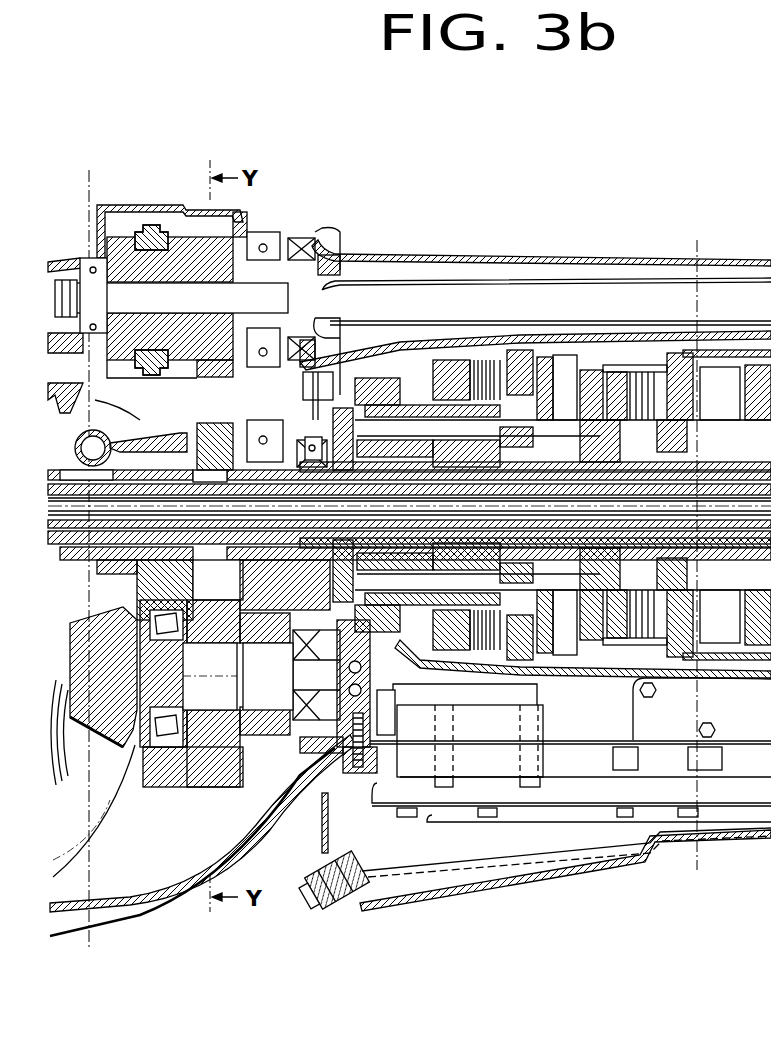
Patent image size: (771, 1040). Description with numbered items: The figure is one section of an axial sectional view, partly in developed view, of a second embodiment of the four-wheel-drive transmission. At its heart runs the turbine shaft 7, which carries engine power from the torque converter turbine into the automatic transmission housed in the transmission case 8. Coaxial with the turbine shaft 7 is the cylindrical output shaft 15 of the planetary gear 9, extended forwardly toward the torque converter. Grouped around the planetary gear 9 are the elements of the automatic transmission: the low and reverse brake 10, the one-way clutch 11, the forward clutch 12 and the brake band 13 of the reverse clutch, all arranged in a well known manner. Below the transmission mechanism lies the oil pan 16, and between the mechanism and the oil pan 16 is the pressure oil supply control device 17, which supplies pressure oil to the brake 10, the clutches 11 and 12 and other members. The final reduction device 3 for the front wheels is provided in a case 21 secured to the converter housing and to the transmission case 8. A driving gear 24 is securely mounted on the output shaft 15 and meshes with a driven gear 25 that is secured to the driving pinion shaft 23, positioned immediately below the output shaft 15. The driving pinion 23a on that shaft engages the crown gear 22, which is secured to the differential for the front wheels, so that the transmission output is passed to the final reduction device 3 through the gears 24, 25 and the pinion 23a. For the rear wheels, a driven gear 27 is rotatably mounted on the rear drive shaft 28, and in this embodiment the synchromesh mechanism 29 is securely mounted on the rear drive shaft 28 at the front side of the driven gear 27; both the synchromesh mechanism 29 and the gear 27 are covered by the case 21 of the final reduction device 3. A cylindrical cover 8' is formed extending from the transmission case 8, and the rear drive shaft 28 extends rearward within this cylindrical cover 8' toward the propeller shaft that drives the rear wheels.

The final reduction device 3 is at (75, 938).
The turbine shaft 7 is at (50, 487).
The transmission case 8 is at (535, 330).
The cylindrical cover 8' is at (541, 230).
The planetary gear 9 is at (388, 400).
The low and reverse brake 10 is at (487, 370).
The one-way clutch 11 is at (503, 420).
The forward clutch 12 is at (637, 358).
The brake band 13 is at (713, 355).
The cylindrical output shaft 15 is at (315, 370).
The oil pan 16 is at (450, 878).
The pressure oil supply control device 17 is at (560, 785).
The case 21 is at (122, 900).
The crown gear 22 is at (112, 808).
The driving pinion shaft 23 is at (222, 695).
The driving pinion 23a is at (83, 727).
The driving gear 24 is at (210, 423).
The driven gear 25 is at (150, 597).
The driven gear 27 is at (190, 250).
The rear drive shaft 28 is at (600, 295).
The synchromesh mechanism 29 is at (148, 225).